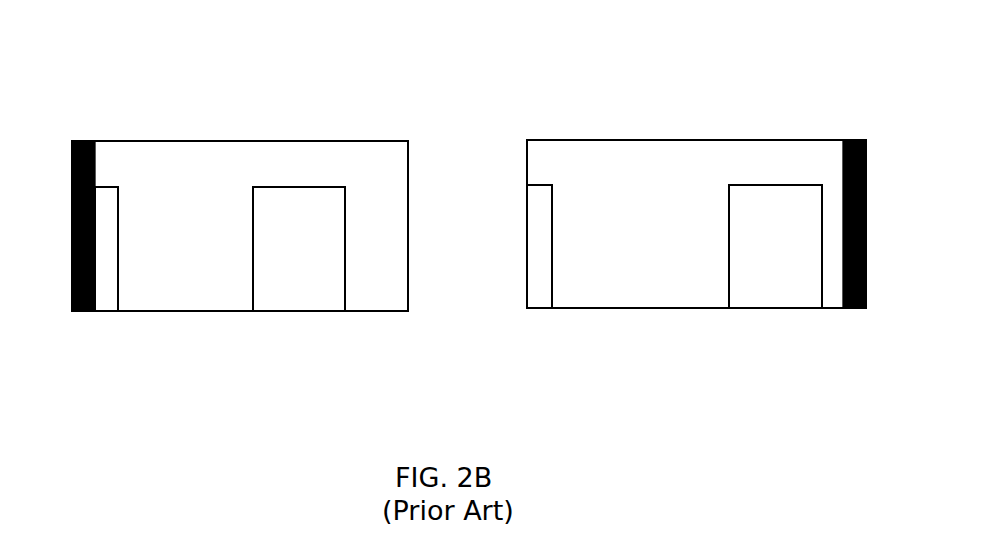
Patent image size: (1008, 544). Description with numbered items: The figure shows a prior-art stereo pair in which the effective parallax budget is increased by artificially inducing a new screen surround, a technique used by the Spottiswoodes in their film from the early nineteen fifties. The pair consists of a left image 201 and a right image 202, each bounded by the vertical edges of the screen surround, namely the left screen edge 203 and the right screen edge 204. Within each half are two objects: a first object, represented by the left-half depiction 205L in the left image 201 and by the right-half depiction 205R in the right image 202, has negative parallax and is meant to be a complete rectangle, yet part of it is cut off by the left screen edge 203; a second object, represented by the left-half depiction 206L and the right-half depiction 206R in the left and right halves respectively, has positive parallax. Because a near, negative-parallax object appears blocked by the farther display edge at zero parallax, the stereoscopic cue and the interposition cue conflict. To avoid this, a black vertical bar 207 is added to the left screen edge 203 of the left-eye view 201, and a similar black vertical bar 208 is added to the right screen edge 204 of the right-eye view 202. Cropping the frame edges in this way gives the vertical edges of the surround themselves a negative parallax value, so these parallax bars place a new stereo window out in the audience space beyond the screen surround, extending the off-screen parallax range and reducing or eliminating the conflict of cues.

The left image 201 is at (240, 137).
The right image 202 is at (699, 128).
The left vertical edge of the screen surround 203 is at (458, 253).
The right vertical edge of the screen surround 204 is at (870, 223).
The left-half representation of object 205 205L is at (102, 277).
The right-half representation of object 205 205R is at (538, 285).
The left-half representation of object 206 206L is at (300, 287).
The right-half representation of object 206 206R is at (779, 285).
The black vertical bar 207 is at (88, 141).
The black vertical bar 208 is at (853, 139).